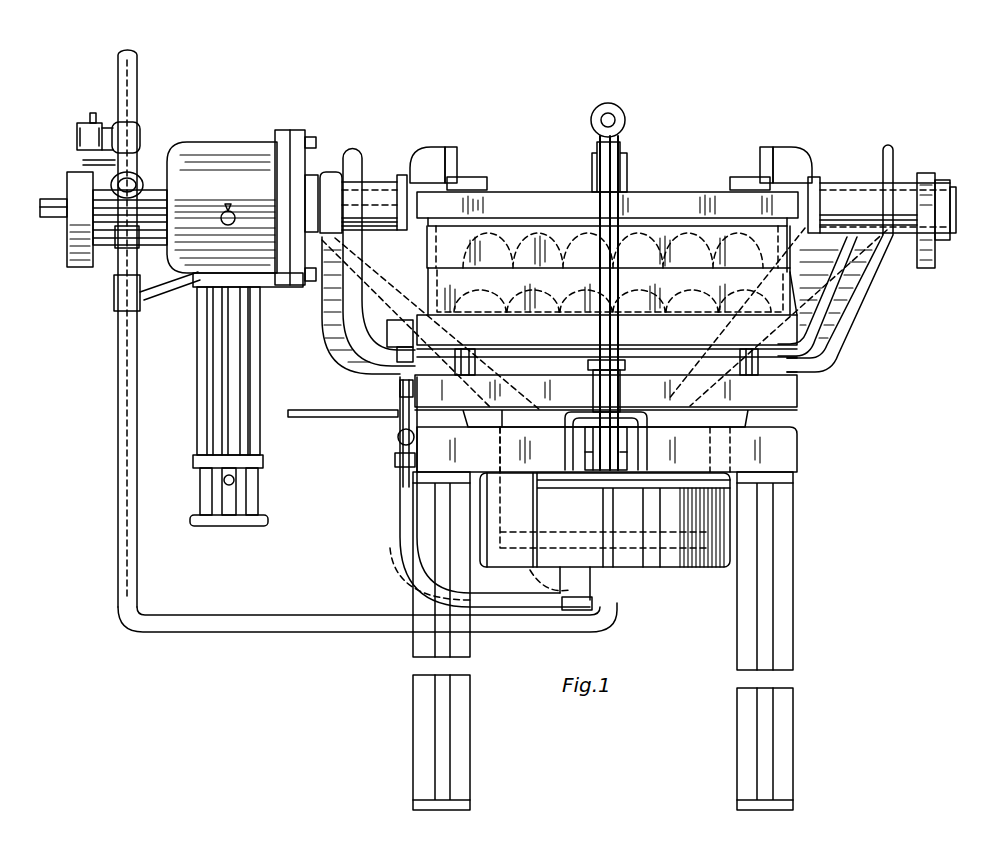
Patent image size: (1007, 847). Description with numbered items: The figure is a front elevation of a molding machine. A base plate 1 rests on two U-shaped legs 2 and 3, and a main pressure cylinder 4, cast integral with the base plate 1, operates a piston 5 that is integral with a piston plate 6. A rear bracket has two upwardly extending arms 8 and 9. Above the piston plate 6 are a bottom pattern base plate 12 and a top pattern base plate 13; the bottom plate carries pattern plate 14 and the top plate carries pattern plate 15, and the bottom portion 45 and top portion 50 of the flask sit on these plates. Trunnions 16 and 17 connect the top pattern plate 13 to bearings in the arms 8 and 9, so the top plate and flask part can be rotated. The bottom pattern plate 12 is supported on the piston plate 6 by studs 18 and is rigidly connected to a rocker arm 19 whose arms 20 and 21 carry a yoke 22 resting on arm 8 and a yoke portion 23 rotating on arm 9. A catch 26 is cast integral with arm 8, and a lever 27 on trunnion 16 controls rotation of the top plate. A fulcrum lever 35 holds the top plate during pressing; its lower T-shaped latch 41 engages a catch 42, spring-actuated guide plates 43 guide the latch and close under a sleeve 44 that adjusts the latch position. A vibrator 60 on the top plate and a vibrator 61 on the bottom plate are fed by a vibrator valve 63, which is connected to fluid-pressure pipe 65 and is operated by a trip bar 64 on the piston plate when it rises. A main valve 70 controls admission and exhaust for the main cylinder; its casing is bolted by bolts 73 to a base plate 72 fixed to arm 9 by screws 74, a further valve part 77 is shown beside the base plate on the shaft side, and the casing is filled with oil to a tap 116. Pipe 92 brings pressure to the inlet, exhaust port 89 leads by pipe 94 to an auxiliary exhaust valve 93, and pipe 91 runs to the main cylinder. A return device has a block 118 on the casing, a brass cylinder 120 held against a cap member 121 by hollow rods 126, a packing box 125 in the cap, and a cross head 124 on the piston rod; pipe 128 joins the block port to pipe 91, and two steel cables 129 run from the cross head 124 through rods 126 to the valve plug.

The base plate 1 is at (798, 462).
The U-shaped leg 2 is at (795, 578).
The U-shaped leg 3 is at (470, 590).
The main pressure cylinder 4 is at (555, 578).
The piston 5 is at (505, 522).
The piston plate 6 is at (800, 404).
The arm 8 is at (880, 315).
The arm 9 is at (430, 230).
The bottom pattern base plate 12 is at (855, 345).
The top pattern base plate 13 is at (680, 190).
The pattern plate 14 is at (790, 303).
The pattern plate 15 is at (787, 226).
The trunnion 16 is at (785, 152).
The trunnion 17 is at (440, 150).
The stud 18 is at (478, 369).
The rocker arm 19 is at (627, 352).
The arm 20 is at (895, 288).
The arm 21 is at (337, 325).
The yoke 22 is at (915, 175).
The yoke portion 23 is at (358, 153).
The catch 26 is at (940, 176).
The lever 27 is at (949, 190).
The fulcrum lever 35 is at (612, 250).
The T-shaped latch 41 is at (655, 490).
The catch 42 is at (628, 458).
The guide plate 43 is at (640, 420).
The sleeve 44 is at (620, 392).
The bottom portion of the flask 45 is at (798, 285).
The top portion of the flask 50 is at (800, 268).
The vibrator 60 is at (622, 163).
The vibrator 61 is at (400, 320).
The vibrator valve 63 is at (397, 437).
The trip bar 64 is at (395, 480).
The fluid-pressure pipe 65 is at (330, 410).
The main valve 70 is at (238, 135).
The base plate 72 is at (290, 130).
The bolt 73 is at (309, 143).
The screw 74 is at (313, 178).
The pulley 77 is at (333, 178).
The exhaust port 89 is at (147, 173).
The pipe 91 is at (197, 615).
The pipe 92 is at (137, 60).
The auxiliary exhaust valve 93 is at (80, 124).
The pipe 94 is at (83, 162).
The tap 116 is at (270, 211).
The block 118 is at (265, 288).
The cylinder 120 is at (200, 410).
The cap member 121 is at (262, 462).
The cross head 124 is at (230, 526).
The packing box 125 is at (237, 485).
The hollow rod 126 is at (257, 348).
The pipe 128 is at (164, 282).
The steel cable 129 is at (200, 504).